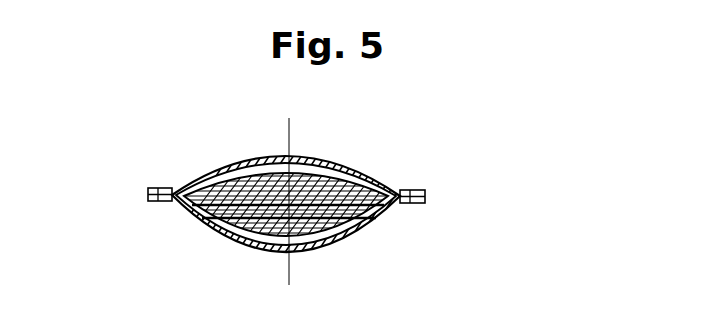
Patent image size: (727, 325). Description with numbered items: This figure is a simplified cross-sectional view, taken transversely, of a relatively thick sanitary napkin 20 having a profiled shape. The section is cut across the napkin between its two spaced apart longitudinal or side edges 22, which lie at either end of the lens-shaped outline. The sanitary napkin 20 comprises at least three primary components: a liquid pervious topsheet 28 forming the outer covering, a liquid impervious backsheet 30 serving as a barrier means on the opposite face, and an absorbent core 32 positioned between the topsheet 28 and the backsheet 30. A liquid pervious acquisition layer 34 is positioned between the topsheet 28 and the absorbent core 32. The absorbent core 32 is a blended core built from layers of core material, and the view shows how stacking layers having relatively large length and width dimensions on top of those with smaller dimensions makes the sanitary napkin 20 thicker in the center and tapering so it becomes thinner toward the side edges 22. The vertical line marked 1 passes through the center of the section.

The longitudinal axis 1 is at (290, 131).
The sanitary napkin 20 is at (293, 177).
The side edges 22 is at (148, 193).
The liquid pervious topsheet 28 is at (352, 165).
The liquid impervious backsheet 30 is at (355, 238).
The absorbent core 32 is at (203, 231).
The liquid pervious acquisition layer 34 is at (376, 186).